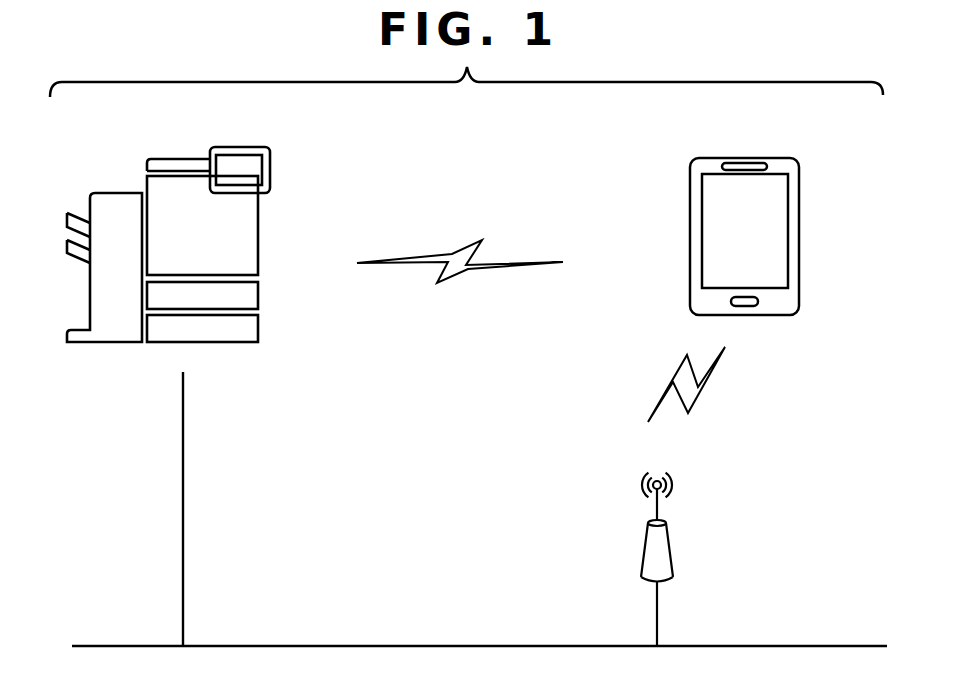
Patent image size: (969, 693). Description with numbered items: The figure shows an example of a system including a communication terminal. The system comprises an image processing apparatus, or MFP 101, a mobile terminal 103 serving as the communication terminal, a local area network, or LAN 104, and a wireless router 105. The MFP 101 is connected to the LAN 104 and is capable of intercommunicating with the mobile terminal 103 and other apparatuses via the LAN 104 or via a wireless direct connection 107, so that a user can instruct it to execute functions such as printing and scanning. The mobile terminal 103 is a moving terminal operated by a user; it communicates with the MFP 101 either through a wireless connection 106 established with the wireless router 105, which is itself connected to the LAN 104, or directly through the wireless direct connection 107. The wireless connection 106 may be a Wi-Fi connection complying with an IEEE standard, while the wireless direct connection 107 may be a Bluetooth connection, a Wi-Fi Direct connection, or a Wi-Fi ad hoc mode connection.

The image processing apparatus (MFP) 101 is at (90, 312).
The mobile terminal 103 is at (799, 218).
The local area network (LAN) 104 is at (248, 646).
The wireless router 105 is at (641, 546).
The wireless connection 106 is at (787, 375).
The wireless direct connection 107 is at (460, 343).